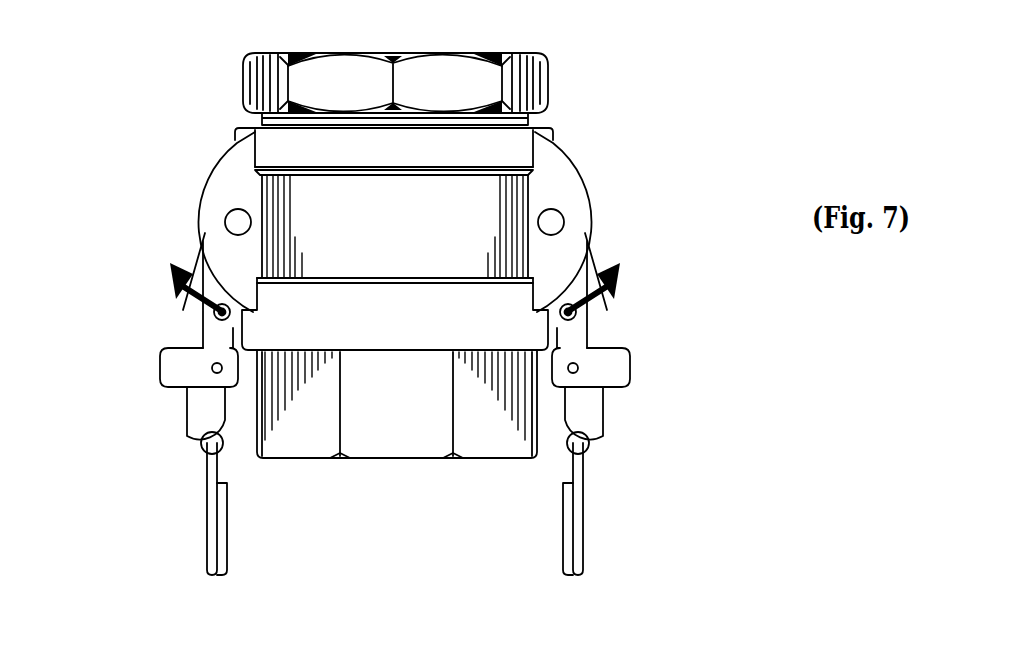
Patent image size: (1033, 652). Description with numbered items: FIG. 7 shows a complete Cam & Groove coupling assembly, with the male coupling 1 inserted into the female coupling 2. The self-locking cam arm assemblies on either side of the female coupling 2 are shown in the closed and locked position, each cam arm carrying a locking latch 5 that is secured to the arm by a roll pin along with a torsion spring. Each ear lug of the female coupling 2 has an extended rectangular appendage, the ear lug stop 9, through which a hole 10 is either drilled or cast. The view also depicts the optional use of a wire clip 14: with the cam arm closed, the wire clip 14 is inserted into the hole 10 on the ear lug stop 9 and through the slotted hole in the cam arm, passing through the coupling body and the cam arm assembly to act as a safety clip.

The male coupling half 1 is at (560, 73).
The female coupling half 2 is at (565, 137).
The locking latch 5 is at (627, 368).
The ear lug stop 9 is at (580, 325).
The hole 10 is at (213, 318).
The wire clip 14 is at (168, 267).